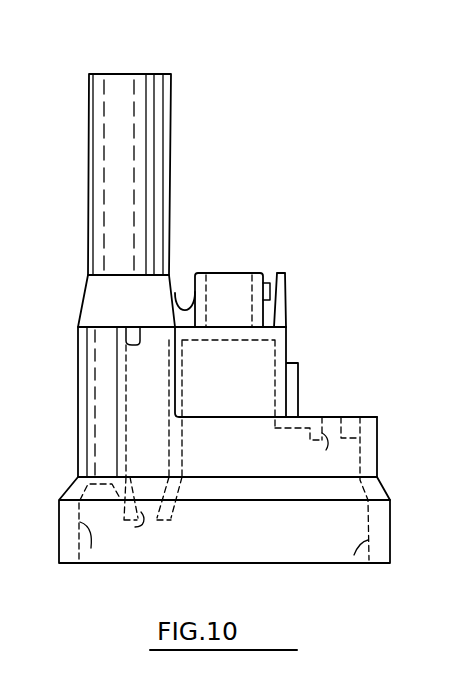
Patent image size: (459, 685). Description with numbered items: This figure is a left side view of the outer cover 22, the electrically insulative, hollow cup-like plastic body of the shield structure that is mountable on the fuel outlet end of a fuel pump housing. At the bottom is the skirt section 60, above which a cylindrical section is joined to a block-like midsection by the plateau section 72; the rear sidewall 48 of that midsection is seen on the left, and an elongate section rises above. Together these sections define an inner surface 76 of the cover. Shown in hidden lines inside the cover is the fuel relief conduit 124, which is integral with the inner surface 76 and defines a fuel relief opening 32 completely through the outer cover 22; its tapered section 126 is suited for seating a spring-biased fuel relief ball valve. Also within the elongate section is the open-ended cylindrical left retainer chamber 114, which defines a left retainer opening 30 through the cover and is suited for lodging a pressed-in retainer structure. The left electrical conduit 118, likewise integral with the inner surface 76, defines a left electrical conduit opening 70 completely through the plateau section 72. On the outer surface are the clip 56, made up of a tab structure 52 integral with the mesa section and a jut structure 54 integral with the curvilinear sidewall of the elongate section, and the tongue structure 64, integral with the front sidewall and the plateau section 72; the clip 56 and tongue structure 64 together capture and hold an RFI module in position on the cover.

The outer cover 22 is at (240, 71).
The left retainer opening 30 is at (222, 256).
The fuel relief opening 32 is at (154, 315).
The rear sidewall 48 is at (117, 365).
The tab structure 52 is at (291, 289).
The jut structure 54 is at (268, 281).
The clip 56 is at (297, 258).
The skirt section 60 is at (50, 520).
The tongue structure 64 is at (302, 365).
The left electrical conduit opening 70 is at (333, 410).
The plateau section 72 is at (361, 417).
The inner surface 76 is at (275, 376).
The left retainer chamber 114 is at (228, 286).
The left electrical conduit 118 is at (328, 440).
The fuel relief conduit 124 is at (134, 321).
The tapered section 126 is at (180, 477).